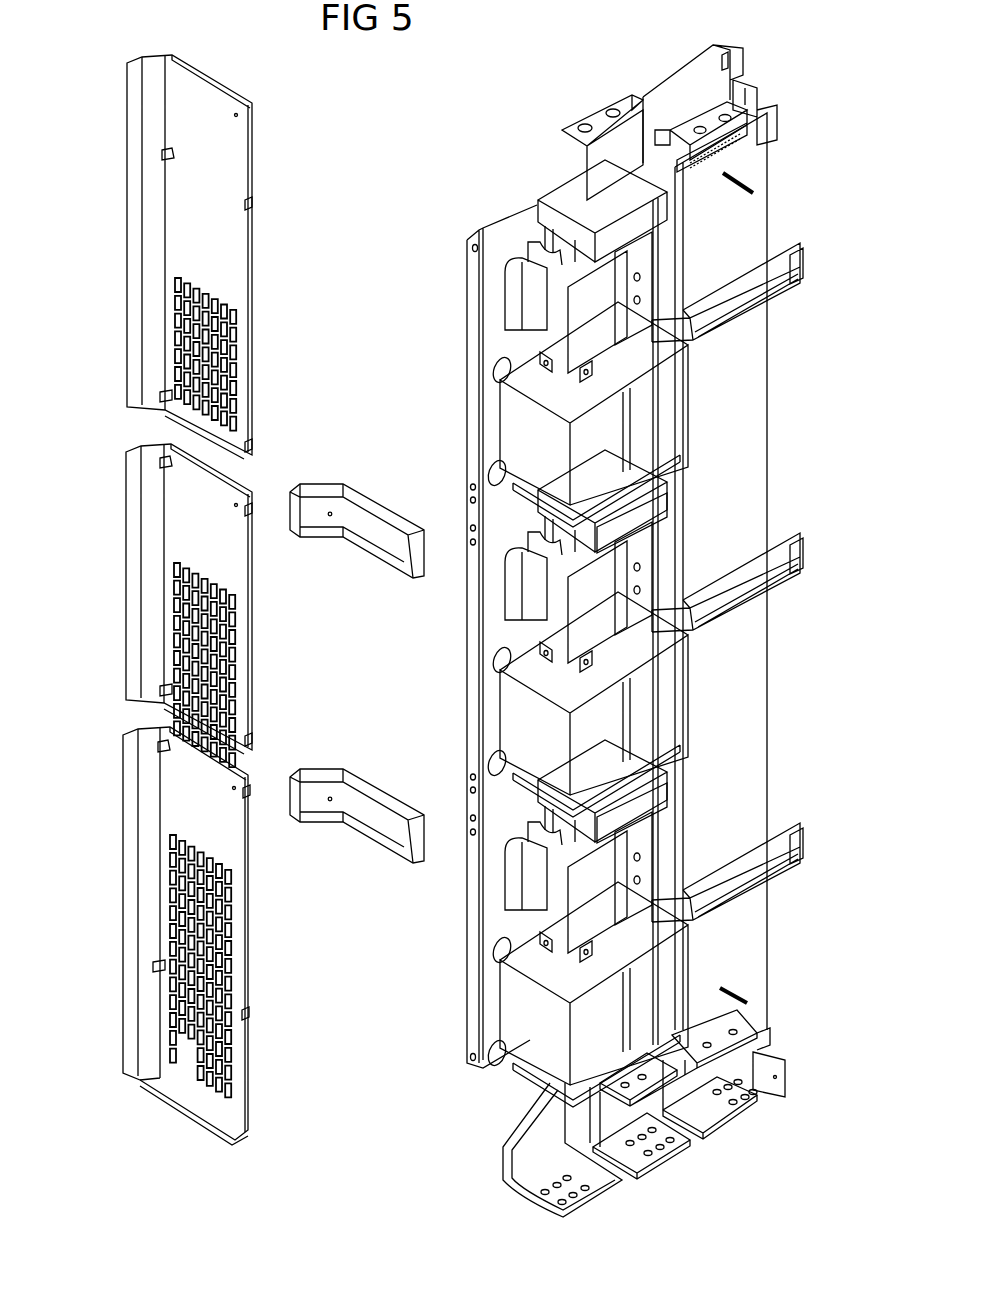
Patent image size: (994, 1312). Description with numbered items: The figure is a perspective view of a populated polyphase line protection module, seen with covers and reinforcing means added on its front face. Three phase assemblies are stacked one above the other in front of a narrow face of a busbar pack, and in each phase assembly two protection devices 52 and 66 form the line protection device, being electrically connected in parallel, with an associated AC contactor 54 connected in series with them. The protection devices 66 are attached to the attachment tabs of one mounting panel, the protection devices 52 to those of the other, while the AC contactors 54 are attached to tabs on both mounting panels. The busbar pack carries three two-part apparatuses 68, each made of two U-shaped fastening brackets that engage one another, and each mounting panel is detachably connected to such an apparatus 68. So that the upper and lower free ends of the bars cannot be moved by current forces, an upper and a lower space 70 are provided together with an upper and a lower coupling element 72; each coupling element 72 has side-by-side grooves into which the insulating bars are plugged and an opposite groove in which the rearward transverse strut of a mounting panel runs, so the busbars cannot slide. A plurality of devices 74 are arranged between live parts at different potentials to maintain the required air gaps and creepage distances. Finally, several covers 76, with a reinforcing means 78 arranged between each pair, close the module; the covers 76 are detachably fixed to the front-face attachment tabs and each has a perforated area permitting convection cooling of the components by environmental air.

The line protection device 52 is at (555, 327).
The AC contactor 54 is at (525, 433).
The protection device 66 is at (517, 296).
The two-part apparatus 68 is at (783, 288).
The space 70 is at (752, 195).
The coupling element 72 is at (777, 122).
The device 74 is at (572, 200).
The cover 76 is at (178, 198).
The reinforcing means 78 is at (322, 491).